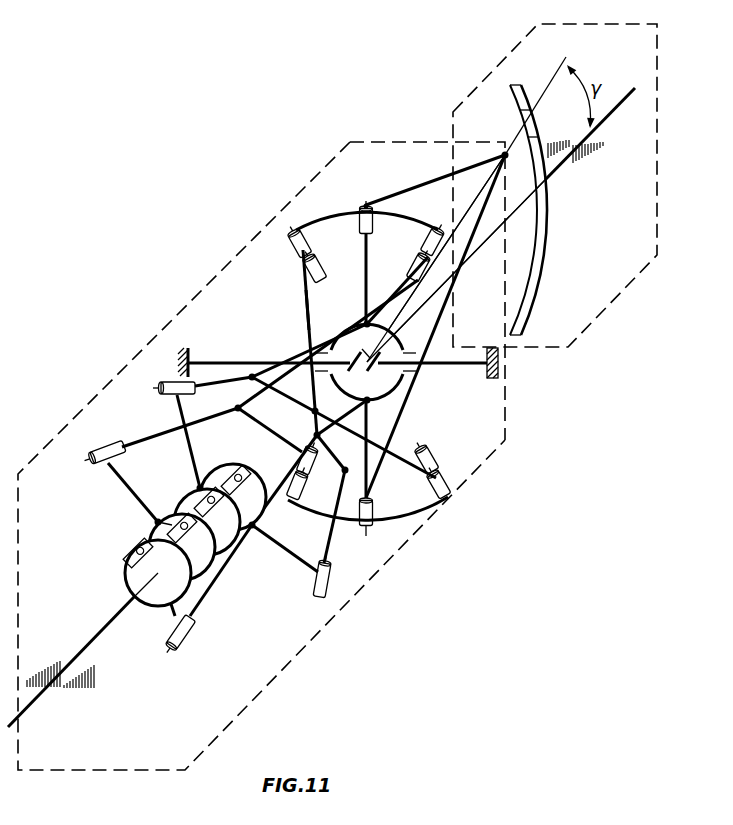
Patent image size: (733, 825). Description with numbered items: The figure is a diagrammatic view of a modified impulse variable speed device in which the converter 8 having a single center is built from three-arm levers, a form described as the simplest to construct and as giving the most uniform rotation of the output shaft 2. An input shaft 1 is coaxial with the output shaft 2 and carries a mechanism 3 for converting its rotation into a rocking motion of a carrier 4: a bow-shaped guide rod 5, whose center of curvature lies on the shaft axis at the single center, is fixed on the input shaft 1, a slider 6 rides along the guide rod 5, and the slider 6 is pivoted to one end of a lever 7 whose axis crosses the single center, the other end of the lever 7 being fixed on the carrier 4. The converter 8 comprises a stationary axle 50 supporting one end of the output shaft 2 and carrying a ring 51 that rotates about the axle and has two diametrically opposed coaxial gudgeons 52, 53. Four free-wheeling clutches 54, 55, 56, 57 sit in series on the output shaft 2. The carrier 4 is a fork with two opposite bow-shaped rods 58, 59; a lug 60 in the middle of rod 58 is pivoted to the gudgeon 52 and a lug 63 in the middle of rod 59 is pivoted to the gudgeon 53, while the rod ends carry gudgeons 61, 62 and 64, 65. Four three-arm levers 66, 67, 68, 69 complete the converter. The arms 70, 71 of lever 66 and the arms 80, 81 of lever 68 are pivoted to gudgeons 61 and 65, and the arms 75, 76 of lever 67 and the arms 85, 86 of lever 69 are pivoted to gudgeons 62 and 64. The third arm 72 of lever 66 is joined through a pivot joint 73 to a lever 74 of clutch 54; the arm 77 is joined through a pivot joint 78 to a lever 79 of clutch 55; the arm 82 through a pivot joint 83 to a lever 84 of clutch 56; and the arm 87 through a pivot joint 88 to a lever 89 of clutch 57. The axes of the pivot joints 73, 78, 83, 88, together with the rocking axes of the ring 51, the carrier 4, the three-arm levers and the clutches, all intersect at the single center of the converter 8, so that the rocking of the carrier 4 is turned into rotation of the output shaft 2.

The input shaft 1 is at (621, 97).
The output shaft 2 is at (93, 637).
The mechanism for converting rotary motion into rocking motion 3 is at (661, 50).
The carrier 4 is at (452, 340).
The bow-shaped guide rod 5 is at (532, 296).
The slider 6 is at (524, 108).
The lever 7 is at (516, 137).
The converter having a single center 8 is at (75, 775).
The stationary axle 50 is at (462, 366).
The ring 51 is at (402, 384).
The gudgeon 52 is at (370, 266).
The gudgeon 53 is at (428, 490).
The free-wheeling clutch 54 is at (126, 582).
The free-wheeling clutch 55 is at (155, 537).
The free-wheeling clutch 56 is at (183, 507).
The free-wheeling clutch 57 is at (222, 478).
The bow-shaped rod 58 is at (341, 209).
The bow-shaped rod 59 is at (283, 516).
The lug 60 is at (369, 201).
The gudgeon 61 is at (325, 278).
The gudgeon 62 is at (410, 284).
The lug 63 is at (372, 529).
The gudgeon 64 is at (288, 450).
The gudgeon 65 is at (425, 446).
The three-arm lever 66 is at (318, 447).
The three-arm lever 67 is at (250, 406).
The three-arm lever 68 is at (250, 371).
The three-arm lever 69 is at (365, 531).
The arm 70 is at (309, 304).
The arm 71 is at (369, 437).
The arm 72 is at (203, 602).
The pivot joint 73 is at (182, 651).
The lever of free-wheeling clutch 74 is at (170, 612).
The arm 75 is at (298, 314).
The arm 76 is at (247, 418).
The arm 77 is at (147, 439).
The pivot joint 78 is at (104, 447).
The lever of free-wheeling clutch 79 is at (124, 482).
The arm 80 is at (298, 283).
The arm 81 is at (396, 441).
The arm 82 is at (222, 375).
The pivot joint 83 is at (175, 383).
The lever of free-wheeling clutch 84 is at (172, 410).
The arm 85 is at (400, 314).
The arm 86 is at (306, 488).
The arm 87 is at (338, 580).
The pivot joint 88 is at (312, 587).
The lever of free-wheeling clutch 89 is at (268, 545).